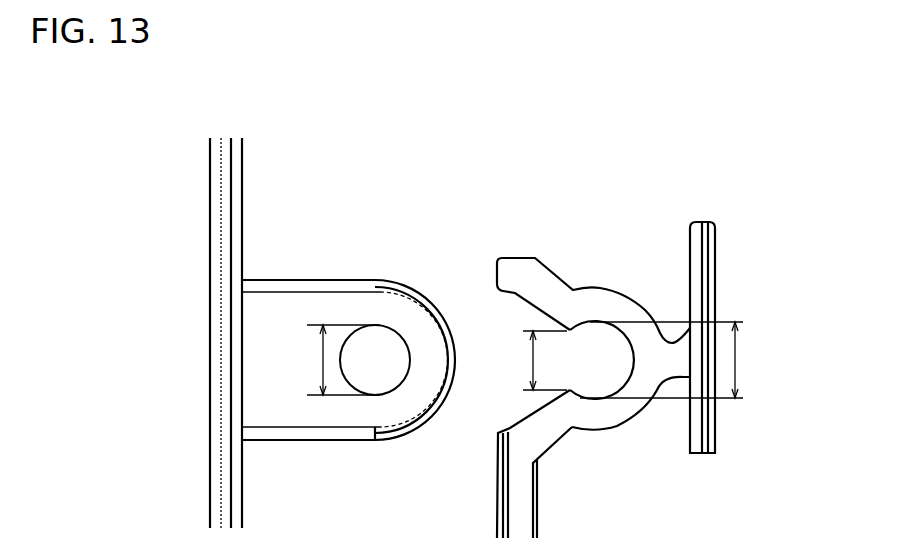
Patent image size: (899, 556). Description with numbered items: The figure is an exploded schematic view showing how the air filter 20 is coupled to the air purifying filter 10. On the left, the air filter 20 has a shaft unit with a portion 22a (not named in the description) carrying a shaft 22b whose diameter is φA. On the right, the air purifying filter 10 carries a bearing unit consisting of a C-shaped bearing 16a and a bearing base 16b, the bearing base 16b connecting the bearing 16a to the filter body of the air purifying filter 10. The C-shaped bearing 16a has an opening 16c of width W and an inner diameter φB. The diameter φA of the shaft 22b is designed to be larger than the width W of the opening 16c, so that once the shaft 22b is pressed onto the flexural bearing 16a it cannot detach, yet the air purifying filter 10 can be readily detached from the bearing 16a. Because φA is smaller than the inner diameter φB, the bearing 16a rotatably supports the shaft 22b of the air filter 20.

The air filter 20 is at (232, 202).
The tongue portion 22a is at (294, 302).
The shaft 22b is at (377, 336).
The air purifying filter 10 is at (692, 223).
The C-shaped bearing 16a is at (602, 298).
The bearing base 16b is at (670, 358).
The opening 16c is at (567, 365).